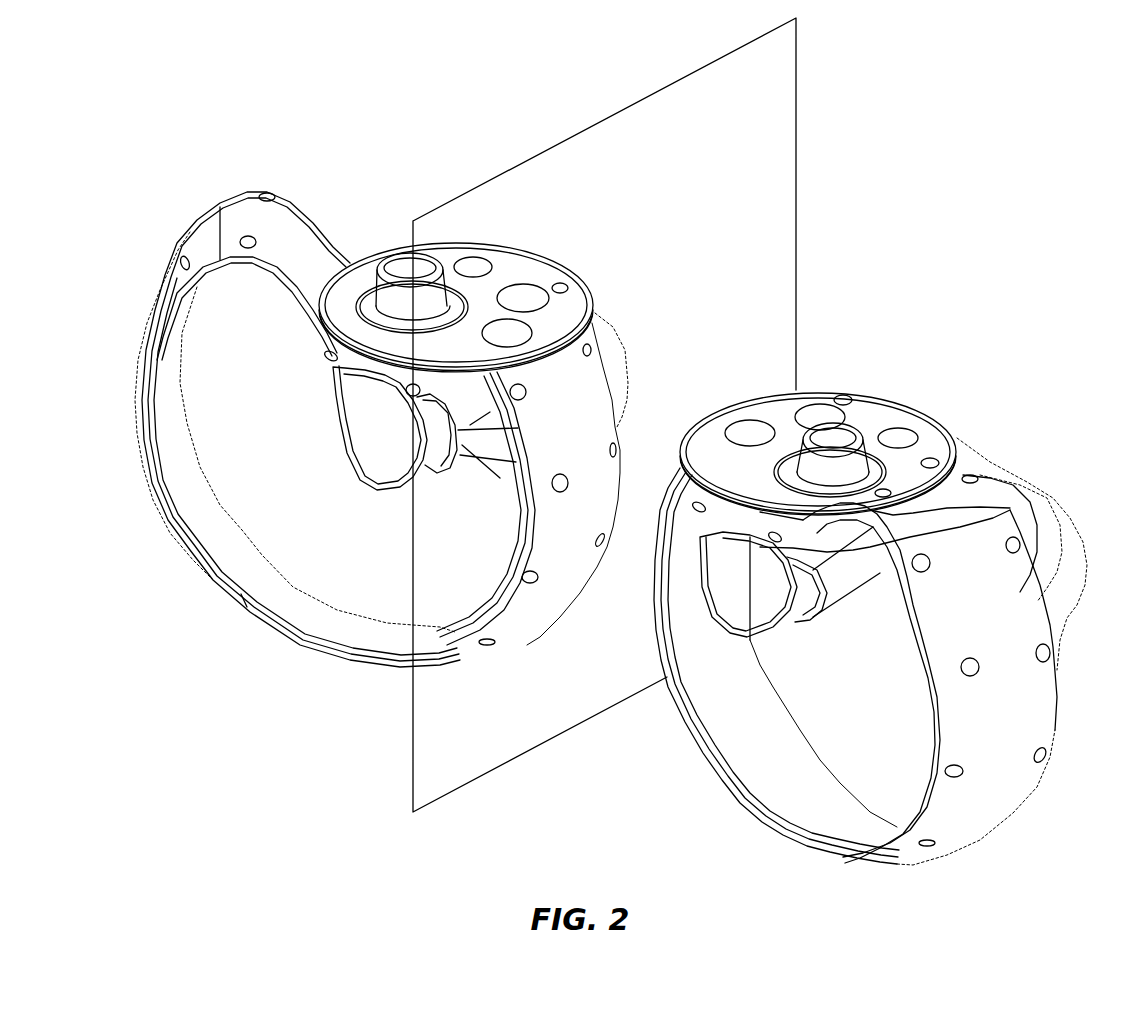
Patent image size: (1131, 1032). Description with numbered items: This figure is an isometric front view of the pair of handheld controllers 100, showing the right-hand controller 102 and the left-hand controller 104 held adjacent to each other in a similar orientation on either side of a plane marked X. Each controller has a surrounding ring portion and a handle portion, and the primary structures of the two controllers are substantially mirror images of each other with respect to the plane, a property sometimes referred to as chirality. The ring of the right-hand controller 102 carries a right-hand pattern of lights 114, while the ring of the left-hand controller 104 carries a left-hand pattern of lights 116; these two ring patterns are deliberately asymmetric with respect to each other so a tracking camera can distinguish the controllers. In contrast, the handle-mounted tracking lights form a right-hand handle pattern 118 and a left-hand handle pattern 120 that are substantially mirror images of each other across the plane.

The pair of handheld controllers 100 is at (887, 259).
The right-hand controller 102 is at (192, 221).
The left-hand controller 104 is at (1057, 463).
The right-hand pattern of lights 114 is at (517, 619).
The left-hand pattern of lights 116 is at (989, 784).
The right-hand handle pattern 118 is at (523, 256).
The left-hand handle pattern 120 is at (886, 416).